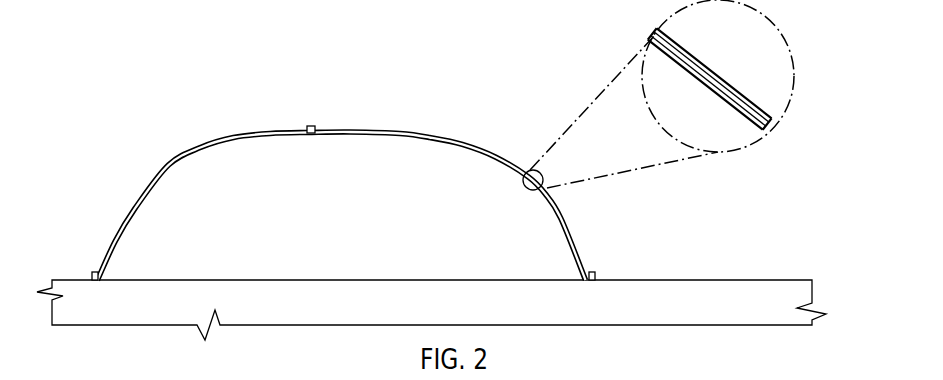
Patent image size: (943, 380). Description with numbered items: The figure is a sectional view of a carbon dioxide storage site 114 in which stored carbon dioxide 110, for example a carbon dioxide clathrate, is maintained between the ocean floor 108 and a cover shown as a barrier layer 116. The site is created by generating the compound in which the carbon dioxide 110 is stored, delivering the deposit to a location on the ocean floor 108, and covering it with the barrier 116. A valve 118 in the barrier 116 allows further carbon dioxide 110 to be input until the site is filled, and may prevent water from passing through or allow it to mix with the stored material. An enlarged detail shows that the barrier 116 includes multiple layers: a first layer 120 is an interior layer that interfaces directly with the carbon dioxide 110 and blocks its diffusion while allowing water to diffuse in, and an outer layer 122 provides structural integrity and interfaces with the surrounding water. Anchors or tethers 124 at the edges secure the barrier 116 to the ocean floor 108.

The ocean floor 108 is at (741, 292).
The carbon dioxide 110 is at (427, 145).
The carbon dioxide storage site 114 is at (205, 88).
The barrier layer 116 is at (259, 131).
The valve 118 is at (311, 126).
The first layer 120 is at (713, 84).
The outer layer 122 is at (682, 35).
The anchor or tether 124 is at (93, 272).